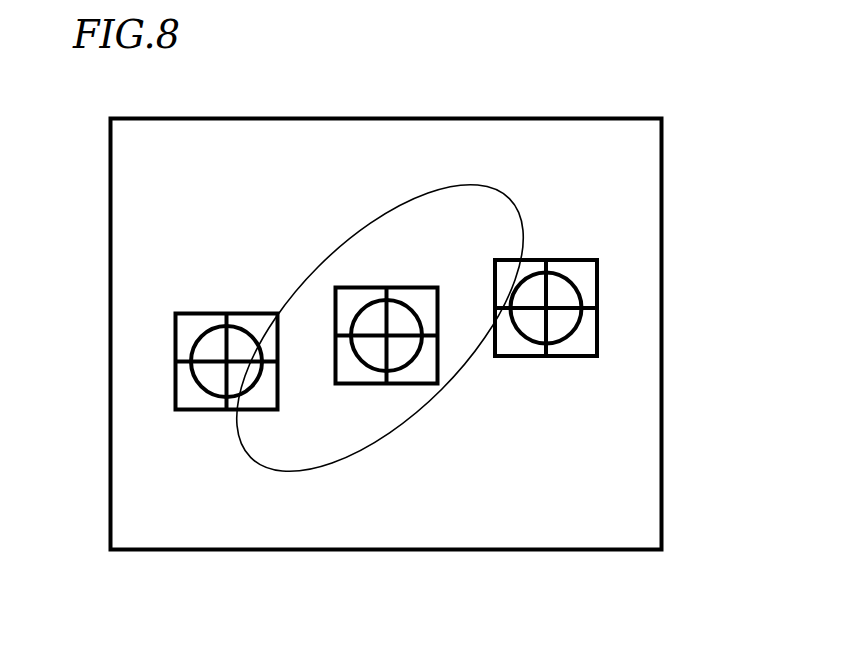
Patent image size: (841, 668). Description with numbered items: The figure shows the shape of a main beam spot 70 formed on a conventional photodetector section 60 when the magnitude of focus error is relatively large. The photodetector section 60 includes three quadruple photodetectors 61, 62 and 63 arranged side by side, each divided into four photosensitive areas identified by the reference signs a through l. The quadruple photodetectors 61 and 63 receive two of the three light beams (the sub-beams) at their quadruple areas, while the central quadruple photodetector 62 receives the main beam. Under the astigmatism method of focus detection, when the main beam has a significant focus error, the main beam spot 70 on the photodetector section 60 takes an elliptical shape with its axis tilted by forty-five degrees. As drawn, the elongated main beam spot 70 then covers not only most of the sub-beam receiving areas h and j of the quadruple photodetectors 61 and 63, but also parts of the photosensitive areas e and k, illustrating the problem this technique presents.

The photodetector section 60 is at (490, 117).
The quadruple photodetector 61 is at (173, 388).
The quadruple photodetector 62 is at (342, 386).
The quadruple photodetector 63 is at (535, 358).
The main beam spot 70 is at (402, 207).